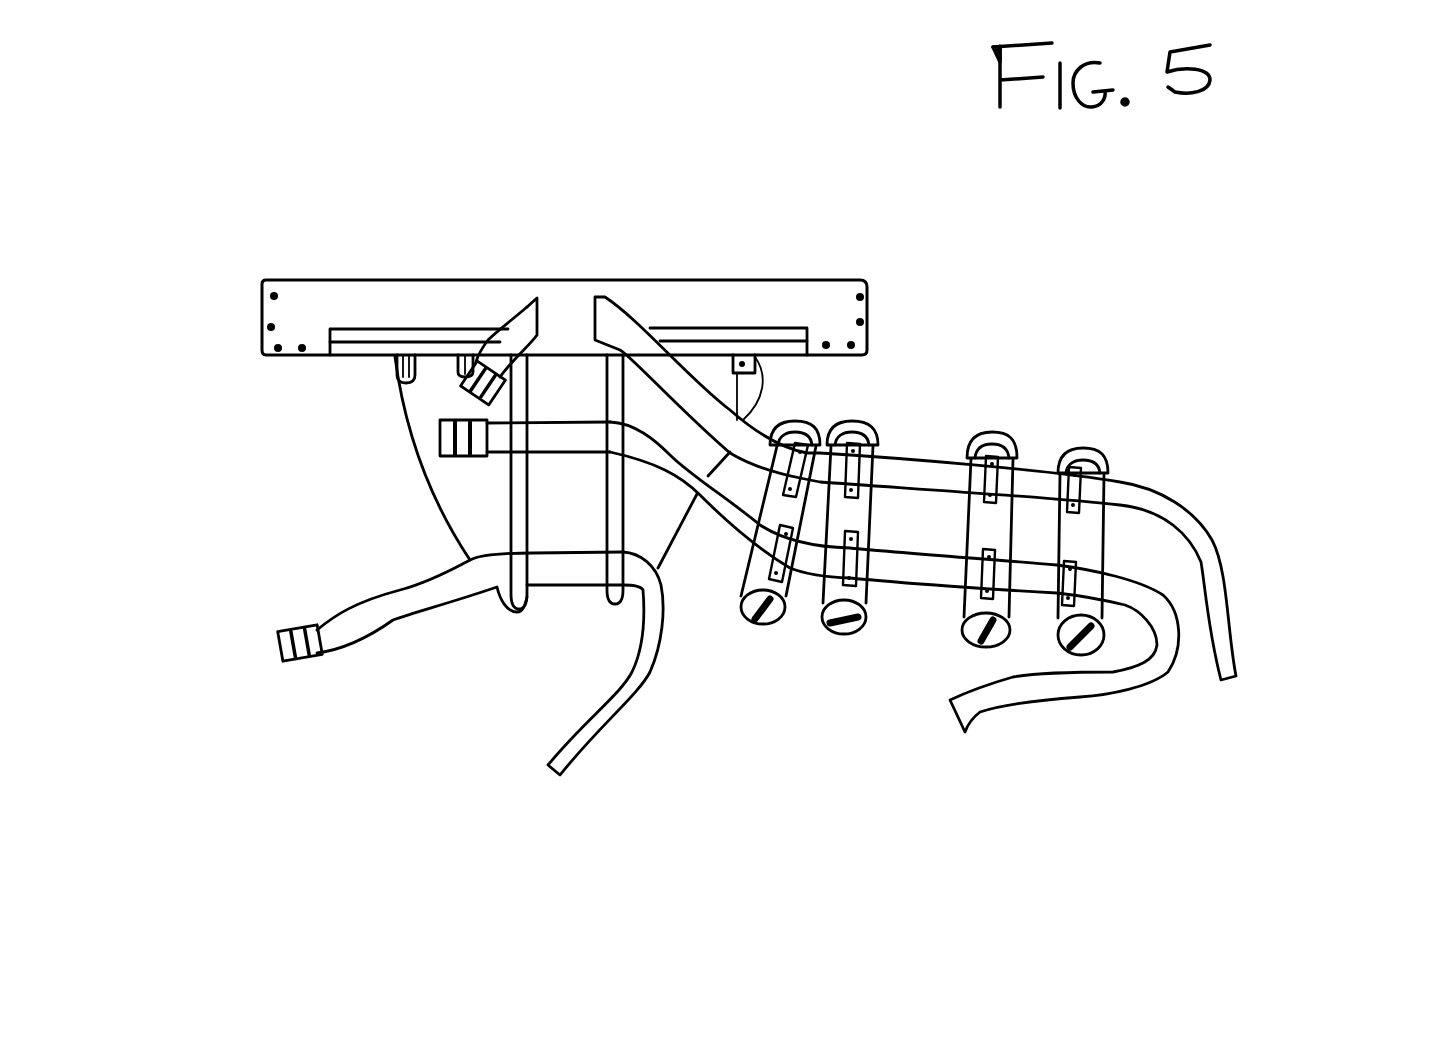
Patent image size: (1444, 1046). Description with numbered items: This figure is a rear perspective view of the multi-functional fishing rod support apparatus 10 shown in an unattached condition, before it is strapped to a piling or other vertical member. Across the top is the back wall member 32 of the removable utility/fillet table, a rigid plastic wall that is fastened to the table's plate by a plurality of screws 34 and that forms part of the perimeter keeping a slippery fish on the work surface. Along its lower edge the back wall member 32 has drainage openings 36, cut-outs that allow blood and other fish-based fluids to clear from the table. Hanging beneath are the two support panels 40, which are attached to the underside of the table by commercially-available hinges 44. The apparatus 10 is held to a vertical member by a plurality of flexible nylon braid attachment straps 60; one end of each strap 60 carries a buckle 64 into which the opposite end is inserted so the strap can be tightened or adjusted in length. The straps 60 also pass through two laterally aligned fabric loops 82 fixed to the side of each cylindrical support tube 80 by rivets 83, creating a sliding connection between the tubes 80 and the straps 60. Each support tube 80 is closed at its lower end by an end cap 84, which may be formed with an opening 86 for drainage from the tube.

The fishing rod support apparatus 10 is at (453, 203).
The back wall member 32 is at (308, 297).
The screws 34 is at (267, 327).
The drainage openings 36 is at (453, 340).
The support panels 40 is at (473, 493).
The hinges 44 is at (462, 366).
The attachment straps 60 is at (635, 670).
The buckle 64 is at (440, 441).
The support tube 80 is at (803, 430).
The loops 82 is at (744, 353).
The rivets 83 is at (972, 558).
The end cap 84 is at (1063, 633).
The opening 86 is at (822, 619).